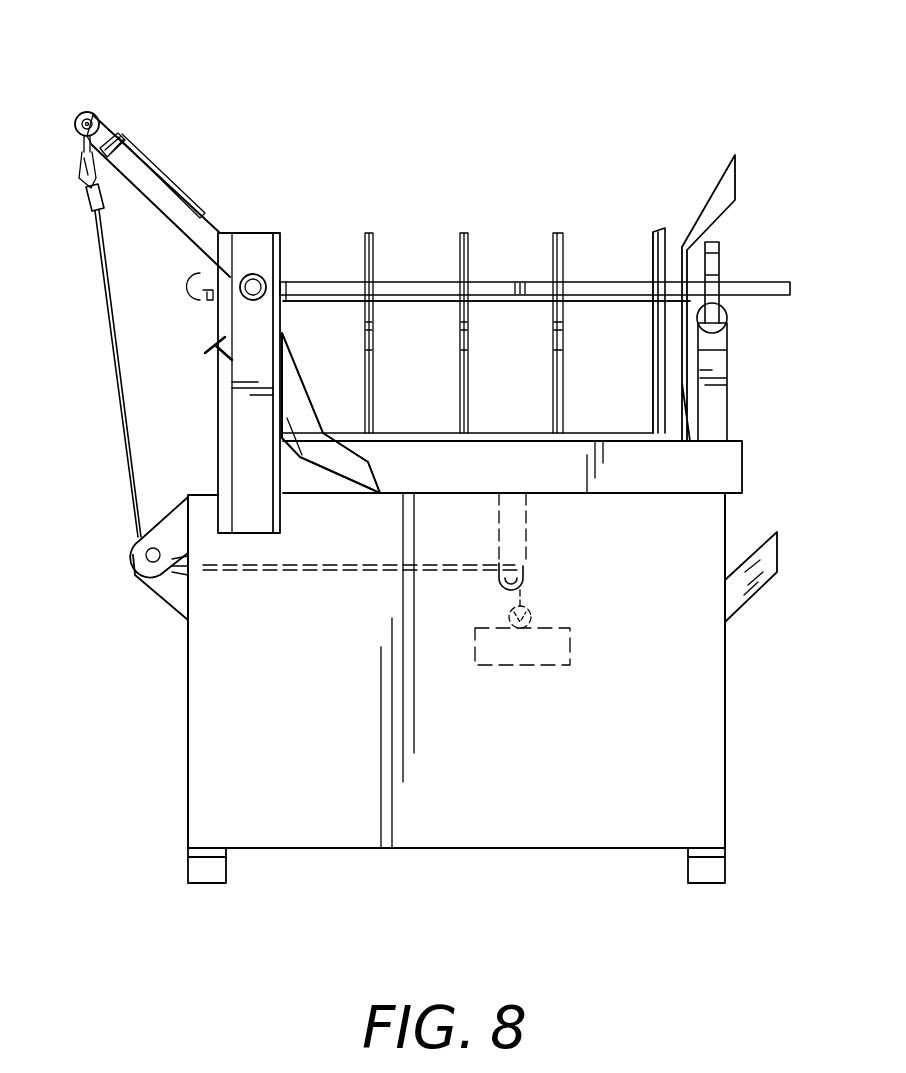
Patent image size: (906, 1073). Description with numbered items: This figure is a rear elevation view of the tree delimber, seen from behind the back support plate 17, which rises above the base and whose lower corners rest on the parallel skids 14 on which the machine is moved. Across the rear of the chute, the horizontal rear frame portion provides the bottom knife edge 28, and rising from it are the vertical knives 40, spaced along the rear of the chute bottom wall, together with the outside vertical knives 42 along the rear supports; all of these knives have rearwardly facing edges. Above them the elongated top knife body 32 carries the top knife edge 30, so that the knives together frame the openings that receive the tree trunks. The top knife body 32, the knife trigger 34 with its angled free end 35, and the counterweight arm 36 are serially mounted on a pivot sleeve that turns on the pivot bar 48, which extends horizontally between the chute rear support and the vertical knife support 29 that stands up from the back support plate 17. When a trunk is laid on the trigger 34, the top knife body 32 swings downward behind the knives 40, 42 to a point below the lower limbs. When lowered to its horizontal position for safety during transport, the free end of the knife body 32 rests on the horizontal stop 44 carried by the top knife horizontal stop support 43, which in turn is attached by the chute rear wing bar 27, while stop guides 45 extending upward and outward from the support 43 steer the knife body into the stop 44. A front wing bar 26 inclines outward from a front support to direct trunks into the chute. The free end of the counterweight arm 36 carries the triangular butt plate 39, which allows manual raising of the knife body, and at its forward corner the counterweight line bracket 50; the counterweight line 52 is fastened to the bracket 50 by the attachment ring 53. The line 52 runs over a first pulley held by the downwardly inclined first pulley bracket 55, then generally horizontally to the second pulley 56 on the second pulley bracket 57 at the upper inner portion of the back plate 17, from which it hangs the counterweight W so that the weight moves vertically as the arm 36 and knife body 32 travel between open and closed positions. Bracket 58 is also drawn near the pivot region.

The skids 14 is at (193, 868).
The back support plate 17 is at (678, 800).
The front wing bar 26 is at (768, 568).
The chute rear wing bar 27 is at (705, 193).
The bottom knife edge 28 is at (430, 437).
The vertical knife support 29 is at (247, 462).
The top knife edge 30 is at (595, 287).
The top knife body 32 is at (578, 303).
The knife trigger 34 is at (300, 397).
The angled free end 35 is at (352, 467).
The counterweight arm 36 is at (165, 198).
The butt plate 39 is at (152, 162).
The vertical knives 40 is at (370, 247).
The outside vertical knives 42 is at (277, 260).
The top knife horizontal stop support 43 is at (727, 345).
The horizontal stop 44 is at (727, 320).
The stop guides 45 is at (720, 262).
The pivot bar 48 is at (253, 274).
The counterweight line bracket 50 is at (100, 130).
The counterweight line 52 is at (117, 387).
The attachment ring 53 is at (85, 145).
The first pulley bracket 55 is at (163, 518).
The second pulley 56 is at (500, 594).
The second pulley bracket 57 is at (527, 538).
The bracket 58 is at (165, 603).
The counterweight W is at (572, 652).